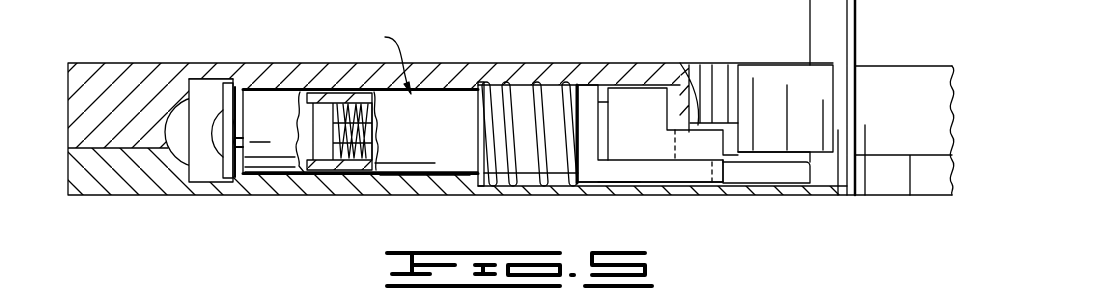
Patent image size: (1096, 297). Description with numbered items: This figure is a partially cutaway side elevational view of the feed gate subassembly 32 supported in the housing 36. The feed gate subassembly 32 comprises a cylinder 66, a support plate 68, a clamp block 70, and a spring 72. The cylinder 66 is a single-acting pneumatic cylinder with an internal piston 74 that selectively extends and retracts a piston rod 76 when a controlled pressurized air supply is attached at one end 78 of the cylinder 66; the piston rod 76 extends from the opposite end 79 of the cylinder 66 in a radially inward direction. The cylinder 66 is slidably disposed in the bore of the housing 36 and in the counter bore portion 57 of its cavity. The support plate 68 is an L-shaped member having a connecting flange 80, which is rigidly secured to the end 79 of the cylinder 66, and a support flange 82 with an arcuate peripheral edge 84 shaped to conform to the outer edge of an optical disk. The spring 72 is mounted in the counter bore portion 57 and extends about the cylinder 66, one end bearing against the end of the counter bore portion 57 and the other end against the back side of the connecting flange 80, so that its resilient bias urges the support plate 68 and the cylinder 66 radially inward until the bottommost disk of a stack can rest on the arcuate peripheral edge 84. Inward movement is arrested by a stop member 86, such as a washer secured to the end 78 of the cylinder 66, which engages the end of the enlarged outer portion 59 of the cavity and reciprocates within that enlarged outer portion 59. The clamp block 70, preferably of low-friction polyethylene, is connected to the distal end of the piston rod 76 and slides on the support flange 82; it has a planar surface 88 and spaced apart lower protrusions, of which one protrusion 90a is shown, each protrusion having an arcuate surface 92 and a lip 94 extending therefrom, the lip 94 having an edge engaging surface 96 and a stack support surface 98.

The housing 36 is at (137, 63).
The enlarged outer portion 59 is at (215, 80).
The stop member 86 is at (218, 168).
The end of the cylinder 78 is at (272, 88).
The feed gate subassembly 32 is at (381, 59).
The piston 74 is at (323, 150).
The piston rod 76 is at (372, 132).
The cylinder 66 is at (425, 178).
The spring 72 is at (480, 82).
The end of the cylinder 79 is at (520, 85).
The counter bore portion 57 is at (532, 182).
The connecting flange 80 is at (588, 85).
The clamp block 70 is at (640, 88).
The planar surface 88 is at (678, 95).
The support plate 68 is at (613, 172).
The support flange 82 is at (643, 175).
The lip 94 is at (724, 160).
The lower protrusion 90a is at (685, 67).
The arcuate surface 92 is at (737, 155).
The stack support surface 98 is at (750, 150).
The edge engaging surface 96 is at (748, 165).
The arcuate peripheral edge 84 is at (823, 160).